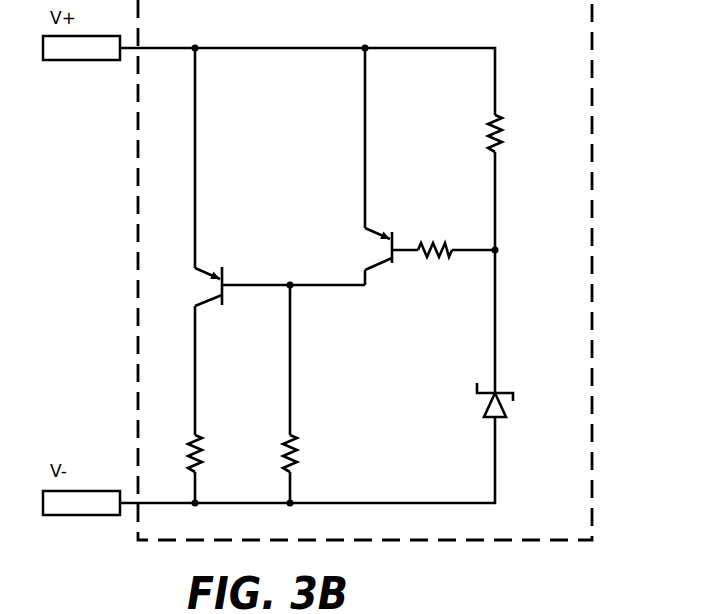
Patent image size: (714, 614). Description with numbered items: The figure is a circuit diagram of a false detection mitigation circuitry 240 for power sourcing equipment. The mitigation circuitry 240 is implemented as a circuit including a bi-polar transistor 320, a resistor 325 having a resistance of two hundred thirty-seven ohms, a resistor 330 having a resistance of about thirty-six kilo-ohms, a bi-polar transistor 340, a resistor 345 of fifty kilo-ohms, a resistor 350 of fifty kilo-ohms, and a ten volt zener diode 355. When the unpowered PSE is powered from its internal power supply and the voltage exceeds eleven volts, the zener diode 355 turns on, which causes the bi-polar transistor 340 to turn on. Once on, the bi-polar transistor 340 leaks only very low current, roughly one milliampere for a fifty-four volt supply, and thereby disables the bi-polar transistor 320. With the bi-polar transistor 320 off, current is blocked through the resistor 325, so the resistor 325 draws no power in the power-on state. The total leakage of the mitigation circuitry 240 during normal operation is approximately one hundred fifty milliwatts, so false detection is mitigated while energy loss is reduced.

The false detection mitigation circuitry 240 is at (593, 220).
The bi-polar transistor 320 is at (219, 297).
The resistor 325 is at (199, 468).
The resistor 330 is at (294, 468).
The bi-polar transistor 340 is at (384, 262).
The resistor 345 is at (441, 258).
The resistor 350 is at (498, 148).
The zener diode 355 is at (497, 450).